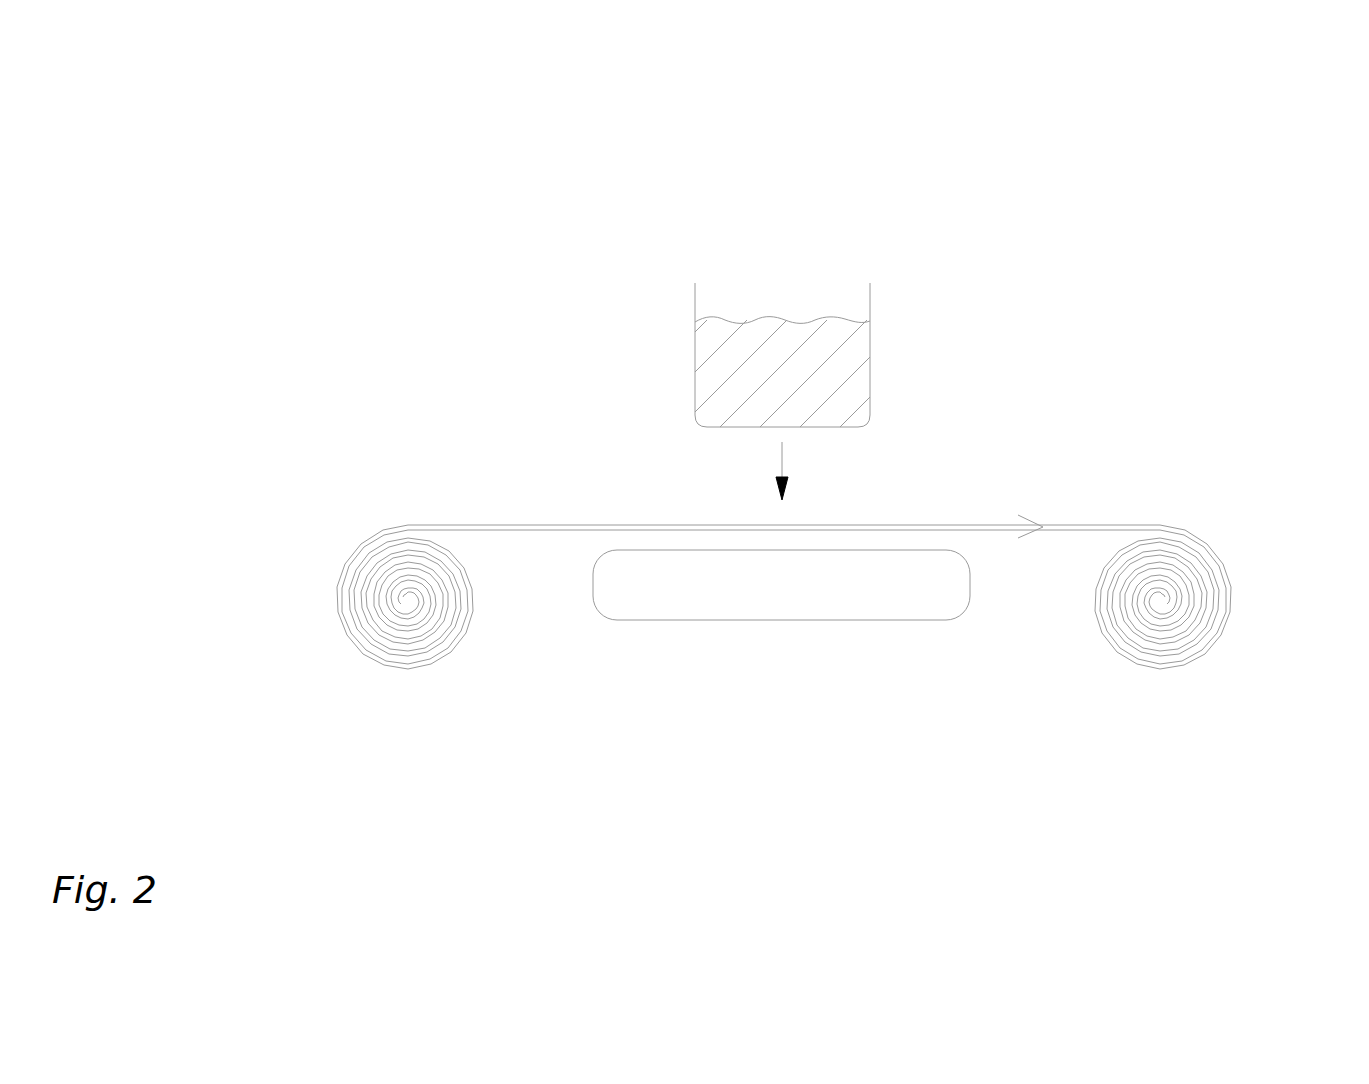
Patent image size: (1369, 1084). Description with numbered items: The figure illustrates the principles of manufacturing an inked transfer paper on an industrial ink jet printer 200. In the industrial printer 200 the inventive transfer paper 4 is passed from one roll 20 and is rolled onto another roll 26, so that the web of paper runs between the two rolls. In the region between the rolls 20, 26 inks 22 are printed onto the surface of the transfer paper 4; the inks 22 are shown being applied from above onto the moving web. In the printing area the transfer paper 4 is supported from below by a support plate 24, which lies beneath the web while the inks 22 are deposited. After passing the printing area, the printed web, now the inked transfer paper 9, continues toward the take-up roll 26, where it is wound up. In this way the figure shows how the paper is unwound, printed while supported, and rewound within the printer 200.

The industrial printer 200 is at (1090, 236).
The transfer paper 4 is at (525, 525).
The inked transfer paper 9 is at (1068, 530).
The roll 20 is at (342, 603).
The inks 22 is at (728, 358).
The support plate 24 is at (820, 602).
The roll 26 is at (1200, 647).